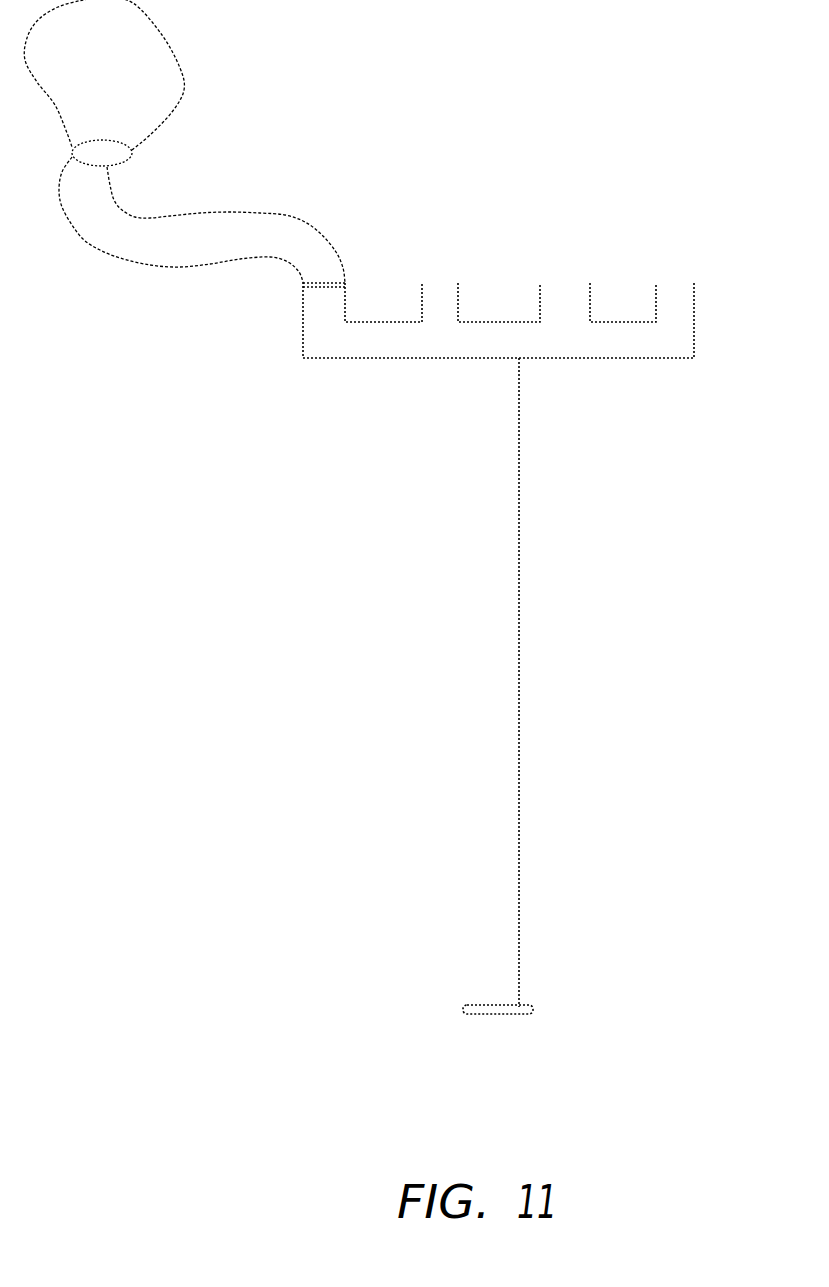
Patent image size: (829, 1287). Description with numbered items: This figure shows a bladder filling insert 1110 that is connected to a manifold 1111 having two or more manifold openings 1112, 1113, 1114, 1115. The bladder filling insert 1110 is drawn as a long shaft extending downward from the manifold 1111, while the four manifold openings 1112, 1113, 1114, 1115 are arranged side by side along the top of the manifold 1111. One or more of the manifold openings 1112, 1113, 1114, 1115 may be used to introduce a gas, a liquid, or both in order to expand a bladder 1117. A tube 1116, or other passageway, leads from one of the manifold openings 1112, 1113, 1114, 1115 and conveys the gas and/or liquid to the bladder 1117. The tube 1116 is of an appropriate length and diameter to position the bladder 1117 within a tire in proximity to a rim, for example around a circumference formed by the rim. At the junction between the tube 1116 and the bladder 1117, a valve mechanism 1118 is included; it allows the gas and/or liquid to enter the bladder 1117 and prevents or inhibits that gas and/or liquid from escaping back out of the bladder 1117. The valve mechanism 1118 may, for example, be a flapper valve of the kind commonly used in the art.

The bladder filling insert 1110 is at (489, 686).
The manifold 1111 is at (498, 320).
The manifold opening 1112 is at (328, 282).
The manifold opening 1113 is at (434, 282).
The manifold opening 1114 is at (562, 282).
The manifold opening 1115 is at (683, 282).
The tube 1116 is at (202, 220).
The bladder 1117 is at (104, 75).
The valve mechanism 1118 is at (133, 158).